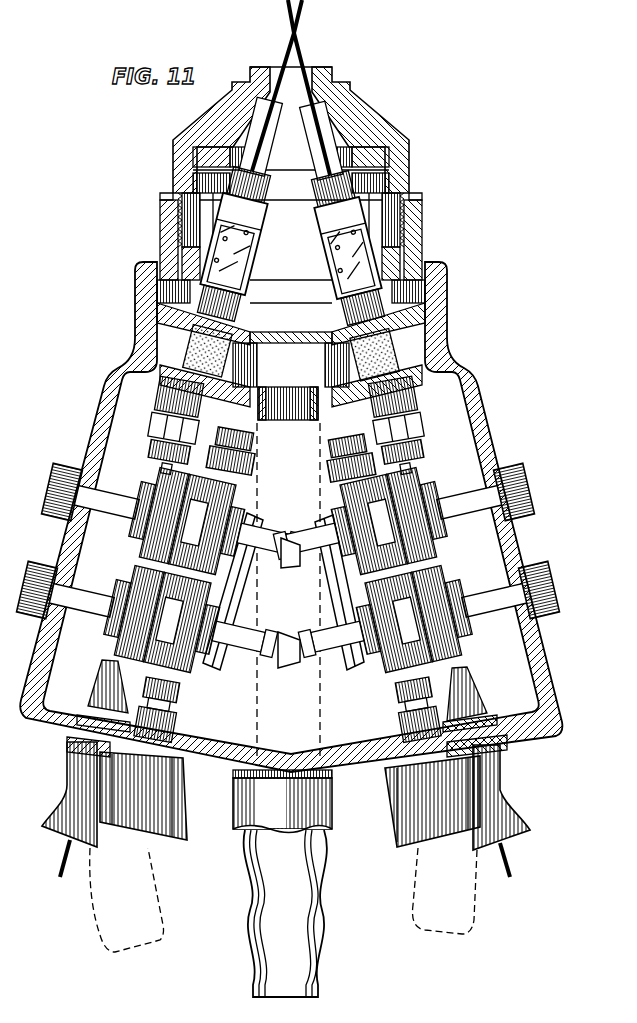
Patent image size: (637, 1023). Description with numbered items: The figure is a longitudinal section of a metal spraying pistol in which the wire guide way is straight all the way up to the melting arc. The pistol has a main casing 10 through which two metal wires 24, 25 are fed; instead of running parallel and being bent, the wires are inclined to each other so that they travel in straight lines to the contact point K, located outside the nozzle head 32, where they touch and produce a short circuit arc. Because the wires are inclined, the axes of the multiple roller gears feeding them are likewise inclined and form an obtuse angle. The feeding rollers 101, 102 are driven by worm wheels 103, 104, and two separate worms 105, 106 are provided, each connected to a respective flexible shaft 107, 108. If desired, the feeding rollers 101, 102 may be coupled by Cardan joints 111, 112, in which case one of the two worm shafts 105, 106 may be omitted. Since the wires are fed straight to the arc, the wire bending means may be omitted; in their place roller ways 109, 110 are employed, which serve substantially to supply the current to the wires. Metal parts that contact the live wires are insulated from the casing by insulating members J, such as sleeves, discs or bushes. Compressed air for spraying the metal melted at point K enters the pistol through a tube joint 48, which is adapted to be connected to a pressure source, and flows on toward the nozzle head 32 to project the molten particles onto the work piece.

The main casing 10 is at (473, 425).
The metal wire 24 is at (289, 16).
The metal wire 25 is at (305, 14).
The contact point K is at (299, 35).
The nozzle head 32 is at (396, 195).
The roller way 110 is at (210, 260).
The roller way 109 is at (368, 266).
The insulating member J is at (247, 323).
The feeding roller 101 is at (492, 593).
The feeding roller 102 is at (88, 600).
The worm wheel 103 is at (350, 507).
The worm wheel 104 is at (247, 492).
The worm 105 is at (390, 697).
The worm 106 is at (187, 692).
The Cardan joint 111 is at (285, 562).
The Cardan joint 112 is at (280, 670).
The flexible shaft 107 is at (433, 885).
The flexible shaft 108 is at (143, 883).
The tube joint 48 is at (290, 891).